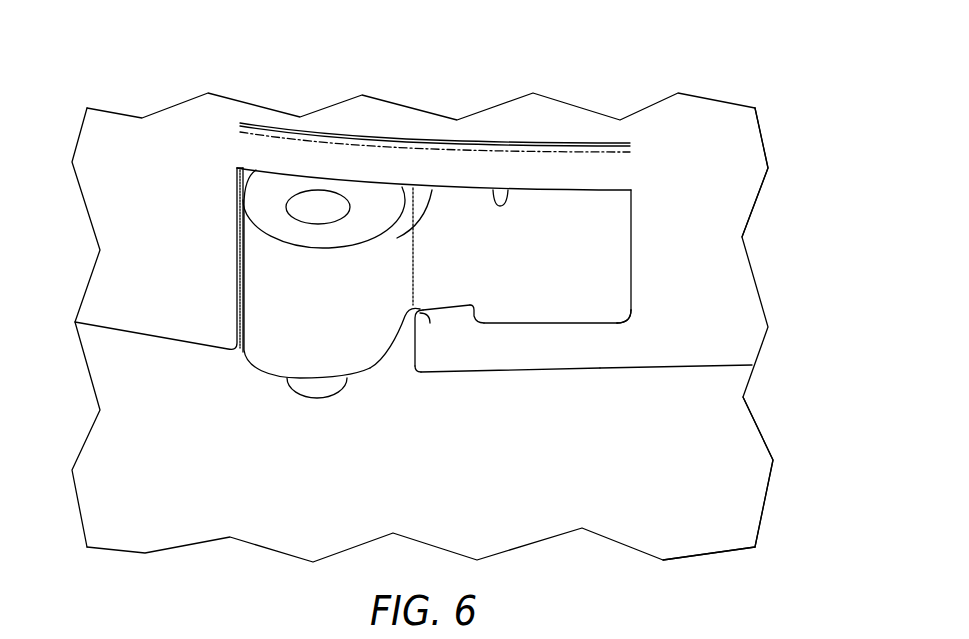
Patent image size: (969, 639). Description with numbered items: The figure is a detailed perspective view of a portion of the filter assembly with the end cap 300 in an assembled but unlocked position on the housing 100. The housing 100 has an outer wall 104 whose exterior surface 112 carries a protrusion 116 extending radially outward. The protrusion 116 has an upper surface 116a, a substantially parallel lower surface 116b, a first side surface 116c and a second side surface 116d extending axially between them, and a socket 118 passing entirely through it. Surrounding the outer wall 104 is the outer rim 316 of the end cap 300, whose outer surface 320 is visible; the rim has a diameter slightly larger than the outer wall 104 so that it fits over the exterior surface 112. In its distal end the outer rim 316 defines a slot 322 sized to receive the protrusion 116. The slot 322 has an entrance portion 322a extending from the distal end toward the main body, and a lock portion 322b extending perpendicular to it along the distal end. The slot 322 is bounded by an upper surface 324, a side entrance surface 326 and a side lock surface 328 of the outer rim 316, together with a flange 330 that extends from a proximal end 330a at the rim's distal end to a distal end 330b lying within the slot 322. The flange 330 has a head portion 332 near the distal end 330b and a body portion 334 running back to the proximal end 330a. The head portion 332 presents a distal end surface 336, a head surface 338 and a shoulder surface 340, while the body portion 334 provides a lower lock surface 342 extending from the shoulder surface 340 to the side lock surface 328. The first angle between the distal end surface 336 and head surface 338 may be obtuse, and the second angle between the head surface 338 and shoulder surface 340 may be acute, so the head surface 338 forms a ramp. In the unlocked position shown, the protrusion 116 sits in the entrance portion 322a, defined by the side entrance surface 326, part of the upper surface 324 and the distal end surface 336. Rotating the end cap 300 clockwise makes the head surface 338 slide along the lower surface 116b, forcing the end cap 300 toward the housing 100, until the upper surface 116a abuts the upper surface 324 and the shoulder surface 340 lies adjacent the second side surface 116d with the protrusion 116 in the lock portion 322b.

The end cap 300 is at (128, 45).
The housing 100 is at (757, 397).
The outer wall 104 is at (727, 514).
The exterior surface 112 is at (718, 478).
The outer rim 316 is at (725, 182).
The outer surface 320 is at (476, 140).
The side entrance surface 326 is at (243, 253).
The protrusion 116 is at (241, 366).
The upper surface 116a is at (365, 212).
The lower surface 116b is at (268, 372).
The first side surface 116c is at (432, 190).
The second side surface 116d is at (240, 167).
The socket 118 is at (319, 205).
The slot 322 is at (533, 206).
The entrance portion 322a is at (370, 372).
The lock portion 322b is at (590, 202).
The upper surface 324 is at (493, 190).
The side lock surface 328 is at (620, 243).
The flange 330 is at (568, 384).
The proximal end 330a is at (627, 336).
The distal end 330b is at (407, 335).
The head portion 332 is at (453, 338).
The body portion 334 is at (603, 350).
The distal end surface 336 is at (422, 384).
The head surface 338 is at (442, 310).
The shoulder surface 340 is at (477, 310).
The lower lock surface 342 is at (553, 323).